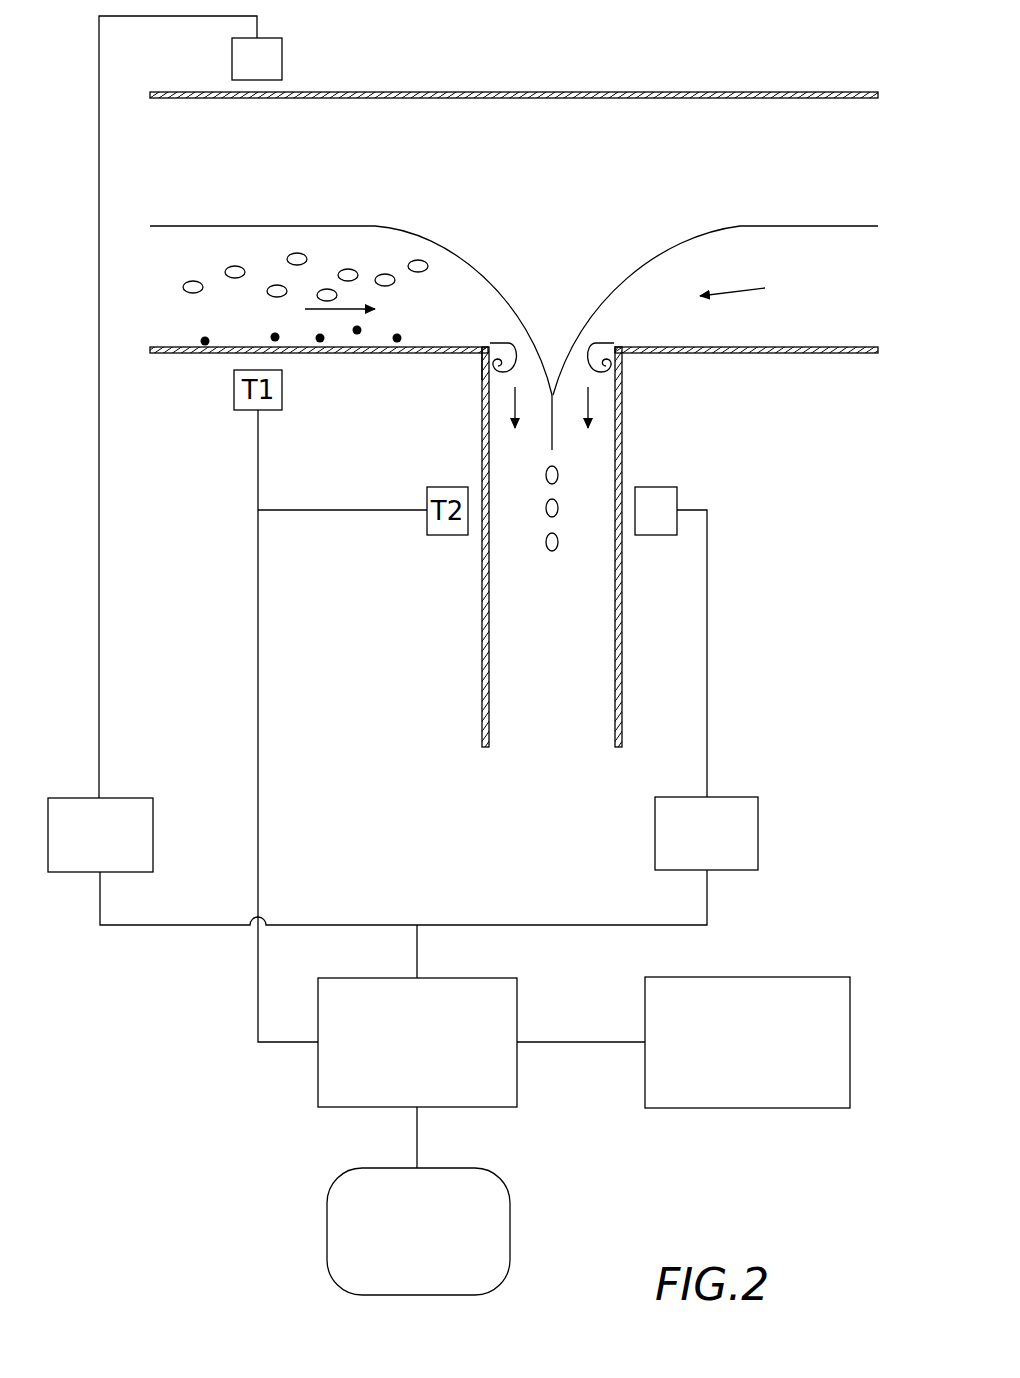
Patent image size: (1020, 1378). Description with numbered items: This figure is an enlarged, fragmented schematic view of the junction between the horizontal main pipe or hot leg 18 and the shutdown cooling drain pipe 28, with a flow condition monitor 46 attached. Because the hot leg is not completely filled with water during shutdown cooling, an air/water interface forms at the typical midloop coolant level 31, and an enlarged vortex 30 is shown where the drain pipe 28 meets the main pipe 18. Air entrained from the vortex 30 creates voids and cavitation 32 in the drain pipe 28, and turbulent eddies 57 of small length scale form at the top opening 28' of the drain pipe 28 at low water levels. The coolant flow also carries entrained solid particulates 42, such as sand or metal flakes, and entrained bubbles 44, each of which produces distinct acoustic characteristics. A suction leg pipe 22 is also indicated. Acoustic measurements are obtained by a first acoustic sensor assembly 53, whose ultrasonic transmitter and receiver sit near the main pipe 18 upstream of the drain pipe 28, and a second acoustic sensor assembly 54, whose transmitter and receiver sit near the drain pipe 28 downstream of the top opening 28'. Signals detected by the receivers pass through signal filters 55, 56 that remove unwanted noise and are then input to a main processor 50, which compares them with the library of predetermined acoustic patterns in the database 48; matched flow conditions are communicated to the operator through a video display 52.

The main pipe 18 is at (490, 92).
The suction leg pipe 22 is at (622, 447).
The drain pipe 28 is at (447, 547).
The top opening of the drain pipe 28' is at (437, 373).
The vortex 30 is at (585, 238).
The coolant level 31 is at (215, 226).
The voids and cavitation 32 is at (545, 540).
The entrained solid particulates 42 is at (272, 332).
The entrained bubbles 44 is at (412, 262).
The flow condition monitor 46 is at (200, 988).
The database 48 is at (830, 977).
The main processor 50 is at (517, 993).
The video display 52 is at (510, 1208).
The first acoustic sensor assembly 53 is at (282, 50).
The second acoustic sensor assembly 54 is at (677, 492).
The signal filter 55 is at (153, 810).
The signal filter 56 is at (745, 797).
The turbulent eddies 57 is at (495, 372).